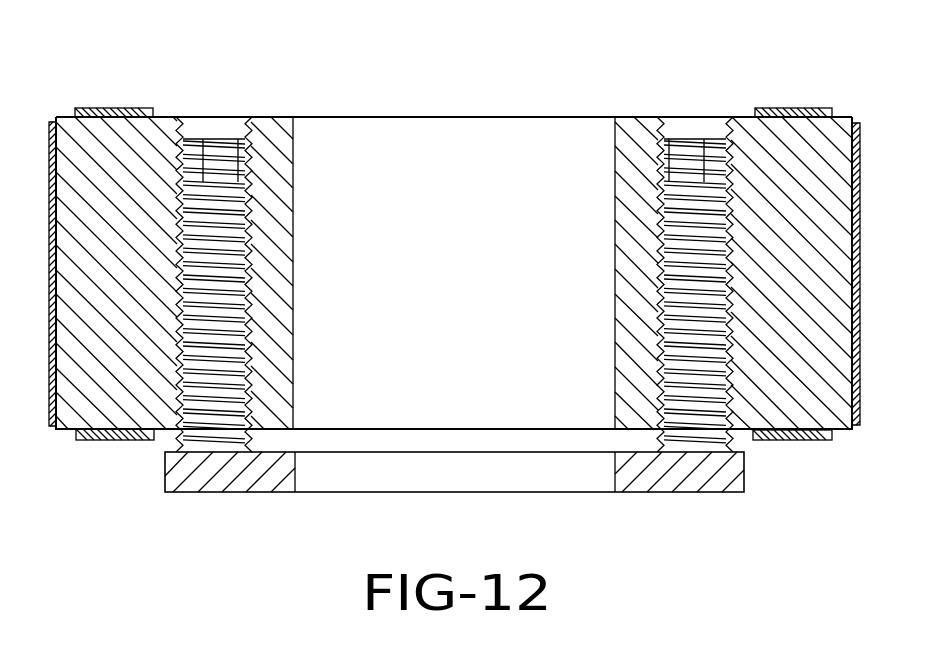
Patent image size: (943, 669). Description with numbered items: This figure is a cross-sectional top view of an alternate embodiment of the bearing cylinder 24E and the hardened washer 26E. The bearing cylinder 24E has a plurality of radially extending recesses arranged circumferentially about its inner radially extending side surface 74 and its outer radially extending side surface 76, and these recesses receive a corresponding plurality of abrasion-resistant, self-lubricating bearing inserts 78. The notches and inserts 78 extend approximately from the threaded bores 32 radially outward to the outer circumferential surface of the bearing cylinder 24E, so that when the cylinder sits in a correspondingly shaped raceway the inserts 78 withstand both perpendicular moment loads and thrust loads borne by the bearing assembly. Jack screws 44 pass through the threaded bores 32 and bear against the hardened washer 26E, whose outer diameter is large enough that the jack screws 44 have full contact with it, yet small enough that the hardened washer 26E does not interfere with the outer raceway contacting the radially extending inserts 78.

The bearing cylinder 24E is at (275, 133).
The hardened washer 26E is at (243, 480).
The threaded bores 32 is at (180, 135).
The jack screws 44 is at (225, 138).
The inner radially extending side surface 74 is at (165, 117).
The outer radially extending side surface 76 is at (63, 430).
The bearing inserts 78 is at (95, 108).